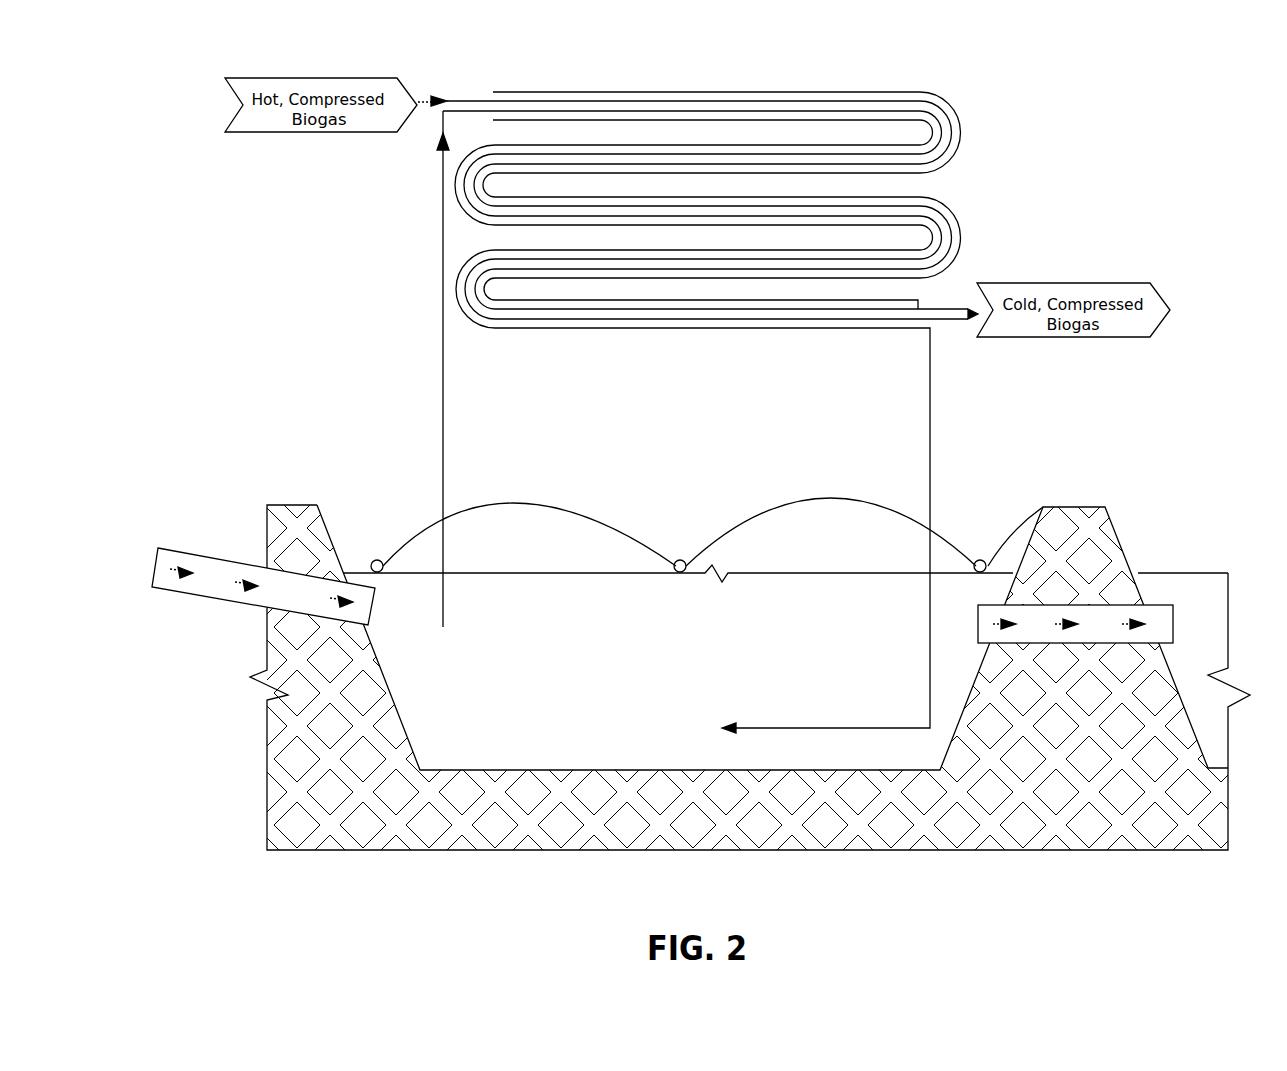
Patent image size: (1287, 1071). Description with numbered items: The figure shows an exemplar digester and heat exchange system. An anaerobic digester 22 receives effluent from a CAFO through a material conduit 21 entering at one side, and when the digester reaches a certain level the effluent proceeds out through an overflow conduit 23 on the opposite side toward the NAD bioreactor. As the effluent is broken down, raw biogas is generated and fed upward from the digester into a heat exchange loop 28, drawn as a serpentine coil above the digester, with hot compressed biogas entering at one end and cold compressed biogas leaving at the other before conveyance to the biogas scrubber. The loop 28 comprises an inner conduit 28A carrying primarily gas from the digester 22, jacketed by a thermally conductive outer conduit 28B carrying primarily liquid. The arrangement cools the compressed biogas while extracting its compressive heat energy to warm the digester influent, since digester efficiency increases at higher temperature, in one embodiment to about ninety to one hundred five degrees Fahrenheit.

The material conduit 21 is at (227, 580).
The anaerobic digester 22 is at (636, 673).
The overflow conduit 23 is at (1100, 628).
The heat exchange loop 28 is at (732, 386).
The inner conduit 28A is at (935, 93).
The outer conduit 28B is at (962, 128).